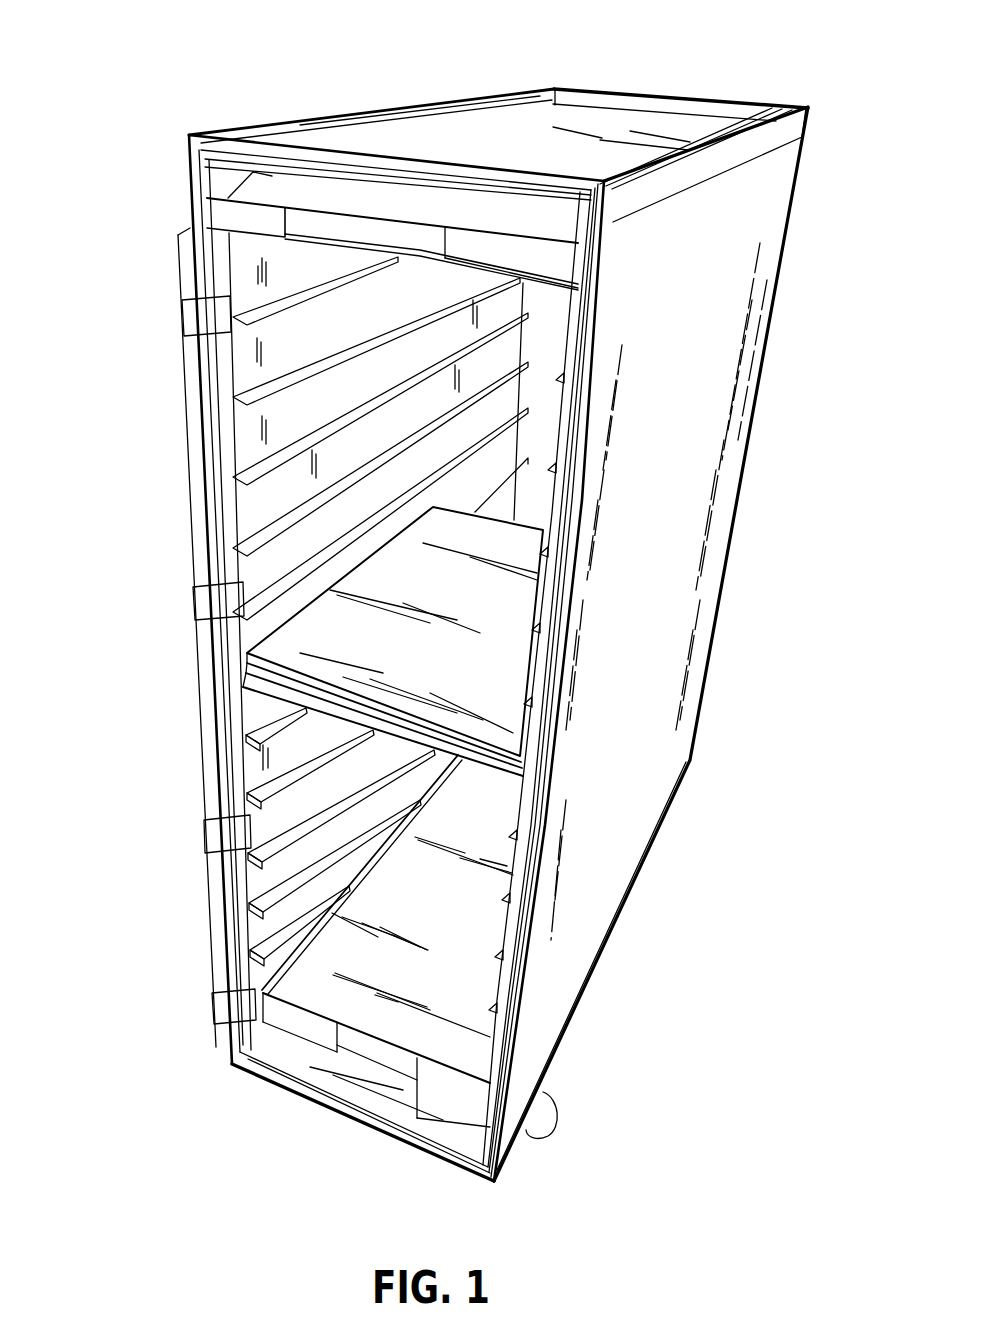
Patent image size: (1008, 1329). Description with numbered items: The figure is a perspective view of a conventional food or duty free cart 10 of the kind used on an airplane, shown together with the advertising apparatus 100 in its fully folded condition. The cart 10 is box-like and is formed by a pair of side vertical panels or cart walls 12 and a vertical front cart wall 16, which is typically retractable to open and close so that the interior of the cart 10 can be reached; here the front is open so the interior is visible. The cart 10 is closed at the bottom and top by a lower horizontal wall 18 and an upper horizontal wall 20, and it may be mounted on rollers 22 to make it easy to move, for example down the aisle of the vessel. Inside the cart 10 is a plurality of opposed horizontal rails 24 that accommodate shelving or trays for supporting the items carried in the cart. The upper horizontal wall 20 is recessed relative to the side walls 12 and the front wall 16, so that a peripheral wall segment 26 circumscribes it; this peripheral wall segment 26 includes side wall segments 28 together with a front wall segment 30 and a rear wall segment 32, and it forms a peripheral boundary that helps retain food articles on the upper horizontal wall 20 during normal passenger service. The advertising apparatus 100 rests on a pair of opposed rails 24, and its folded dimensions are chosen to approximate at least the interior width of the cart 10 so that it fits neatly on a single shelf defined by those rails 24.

The cart 10 is at (786, 467).
The side vertical panels or cart walls 12 is at (646, 446).
The vertical front cart wall 16 is at (265, 192).
The lower horizontal wall 18 is at (340, 987).
The upper horizontal wall 20 is at (512, 135).
The rollers 22 is at (545, 1092).
The opposed horizontal rails 24 is at (245, 470).
The peripheral wall segment 26 is at (430, 90).
The side wall segments 28 is at (360, 128).
The front wall segment 30 is at (295, 148).
The rear wall segment 32 is at (710, 105).
The advertising apparatus 100 is at (295, 648).